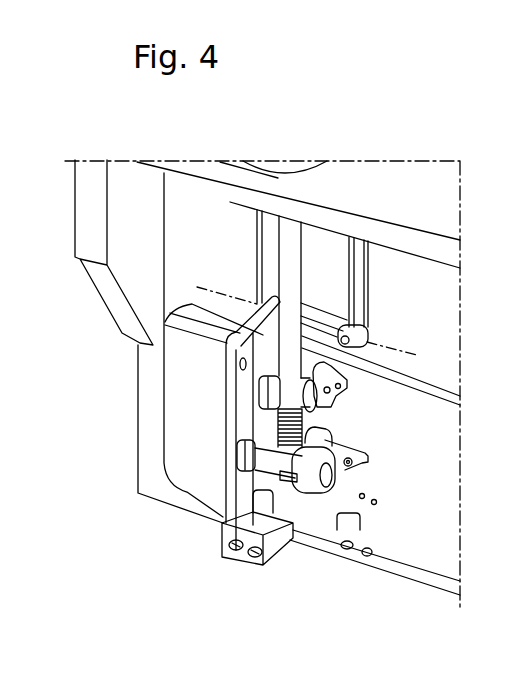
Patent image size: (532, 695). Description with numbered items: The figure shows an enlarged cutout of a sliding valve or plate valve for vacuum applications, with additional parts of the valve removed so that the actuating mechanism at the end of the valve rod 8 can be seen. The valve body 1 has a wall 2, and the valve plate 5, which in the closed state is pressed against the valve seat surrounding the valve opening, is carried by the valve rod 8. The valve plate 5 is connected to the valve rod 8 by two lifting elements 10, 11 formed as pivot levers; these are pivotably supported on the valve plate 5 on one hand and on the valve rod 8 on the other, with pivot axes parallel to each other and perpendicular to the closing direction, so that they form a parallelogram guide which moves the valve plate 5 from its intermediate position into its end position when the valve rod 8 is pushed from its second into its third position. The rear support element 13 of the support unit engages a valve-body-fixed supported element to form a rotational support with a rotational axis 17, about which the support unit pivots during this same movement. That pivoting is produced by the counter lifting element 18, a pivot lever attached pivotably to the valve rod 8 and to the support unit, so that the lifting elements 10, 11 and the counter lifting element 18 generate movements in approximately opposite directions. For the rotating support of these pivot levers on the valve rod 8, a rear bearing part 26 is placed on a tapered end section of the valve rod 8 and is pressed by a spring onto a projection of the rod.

The valve body 1 is at (96, 317).
The wall 2 is at (167, 490).
The valve plate 5 is at (413, 493).
The valve rod 8 is at (297, 253).
The lifting element 10 is at (255, 437).
The lifting element 11 is at (280, 375).
The rear support element 13 is at (313, 317).
The rotational axis 17 is at (217, 290).
The counter lifting element 18 is at (262, 447).
The rear bearing part 26 is at (278, 405).